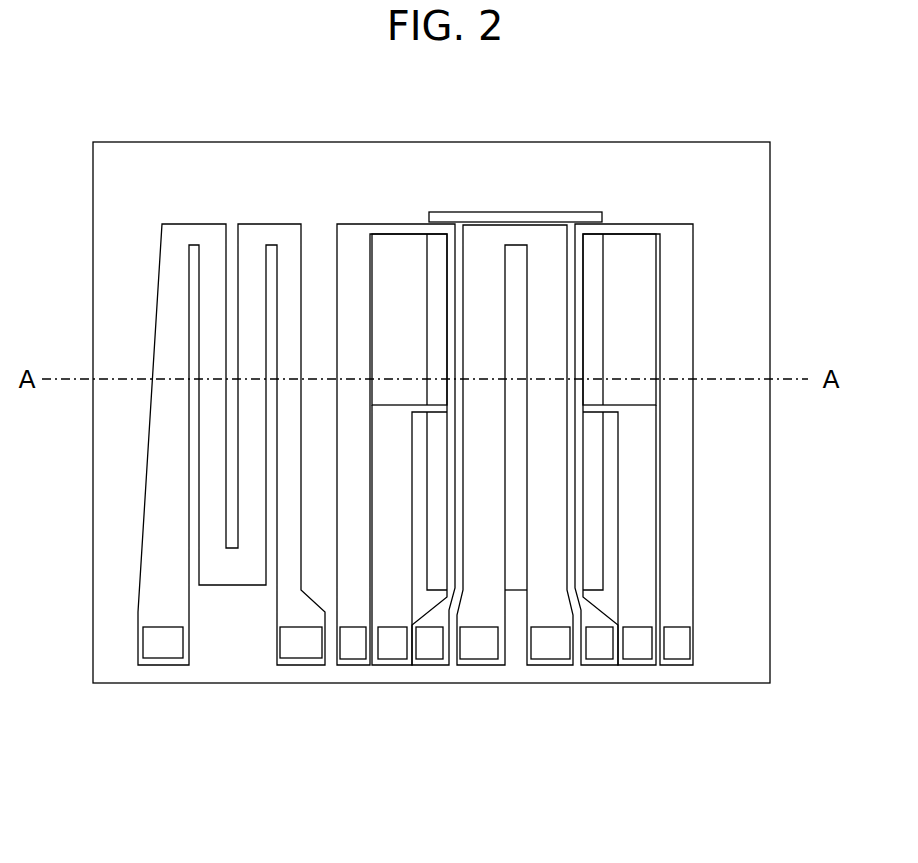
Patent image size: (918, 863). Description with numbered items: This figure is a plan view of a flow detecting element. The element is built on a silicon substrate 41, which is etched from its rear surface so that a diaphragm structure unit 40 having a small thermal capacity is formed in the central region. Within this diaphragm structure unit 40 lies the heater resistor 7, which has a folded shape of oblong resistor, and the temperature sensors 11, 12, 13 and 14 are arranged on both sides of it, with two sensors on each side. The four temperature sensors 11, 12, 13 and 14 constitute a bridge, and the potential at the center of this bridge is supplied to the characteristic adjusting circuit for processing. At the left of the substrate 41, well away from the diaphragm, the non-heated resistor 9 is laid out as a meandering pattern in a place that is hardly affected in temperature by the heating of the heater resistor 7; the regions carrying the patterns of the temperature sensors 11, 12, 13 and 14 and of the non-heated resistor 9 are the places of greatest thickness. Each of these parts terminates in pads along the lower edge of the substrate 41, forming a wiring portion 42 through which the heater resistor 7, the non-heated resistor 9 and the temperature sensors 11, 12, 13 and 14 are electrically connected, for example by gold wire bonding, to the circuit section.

The heater resistor 7 is at (529, 225).
The non-heated resistor 9 is at (231, 448).
The temperature sensor 11 is at (582, 252).
The temperature sensor 12 is at (578, 475).
The temperature sensor 13 is at (448, 473).
The temperature sensor 14 is at (445, 272).
The diaphragm structure unit 40 is at (477, 210).
The silicon substrate 41 is at (713, 141).
The wiring portion 42 is at (165, 660).